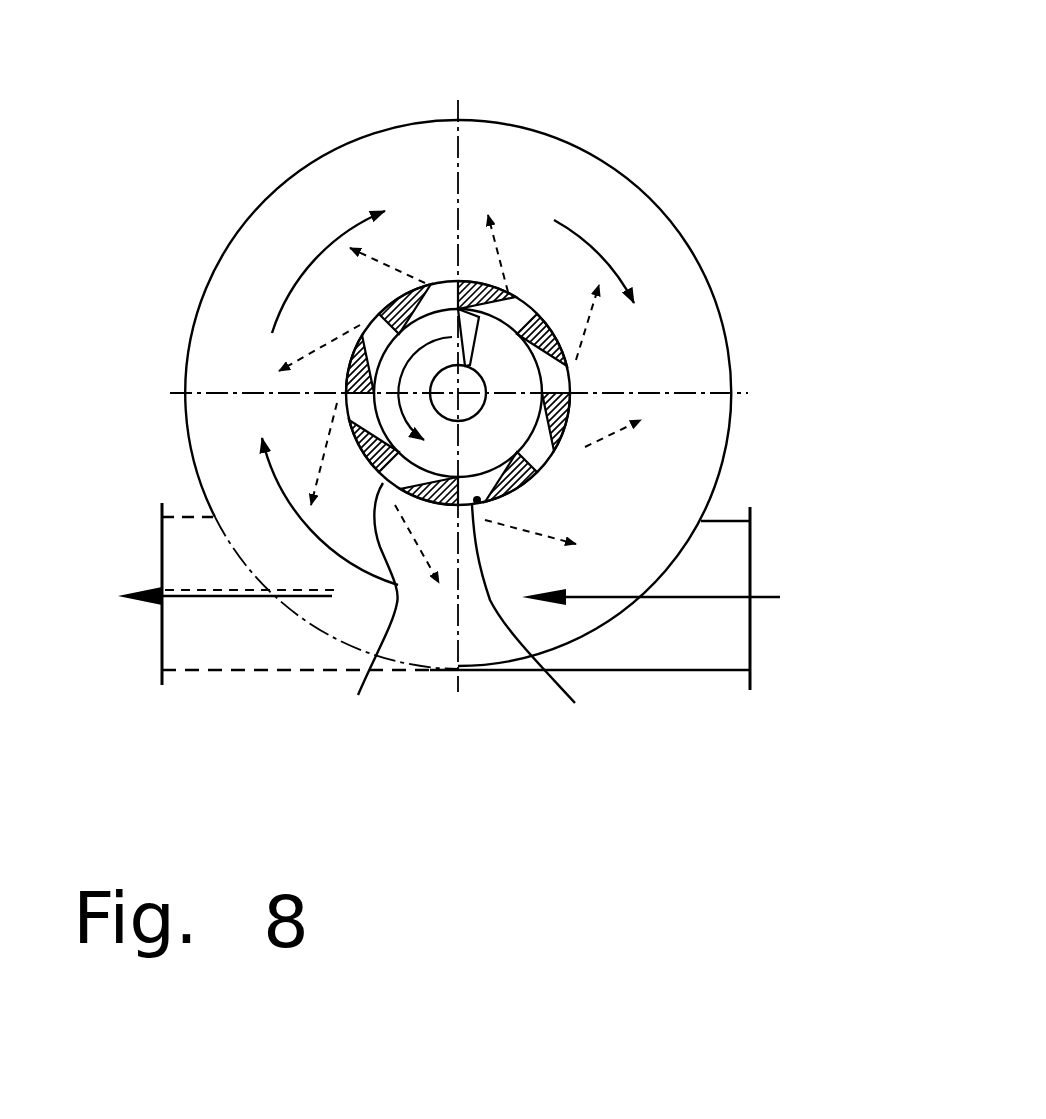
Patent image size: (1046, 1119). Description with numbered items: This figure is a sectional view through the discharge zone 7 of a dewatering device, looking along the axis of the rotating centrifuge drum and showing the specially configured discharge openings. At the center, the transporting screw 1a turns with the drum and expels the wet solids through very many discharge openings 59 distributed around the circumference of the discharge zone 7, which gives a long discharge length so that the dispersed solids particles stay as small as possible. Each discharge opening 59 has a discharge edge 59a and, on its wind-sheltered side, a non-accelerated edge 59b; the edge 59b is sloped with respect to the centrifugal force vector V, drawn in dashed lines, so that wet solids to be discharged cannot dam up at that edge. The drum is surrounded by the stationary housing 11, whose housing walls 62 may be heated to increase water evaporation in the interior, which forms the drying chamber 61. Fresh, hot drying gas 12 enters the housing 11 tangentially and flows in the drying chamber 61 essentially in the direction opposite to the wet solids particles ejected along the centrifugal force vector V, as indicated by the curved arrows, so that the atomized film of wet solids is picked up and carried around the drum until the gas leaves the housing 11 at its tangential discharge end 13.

The transporting screw 1a is at (466, 333).
The centrifugal force vector V is at (508, 248).
The housing 11 is at (598, 158).
The drying gas 12 is at (590, 245).
The discharge zone 7 is at (590, 370).
The housing walls 62 is at (725, 446).
The drying chamber 61 is at (240, 305).
The tangential discharge end 13 is at (256, 672).
The discharge opening 59 is at (575, 703).
The discharge edge 59a is at (477, 501).
The non-accelerated edge 59b is at (358, 695).